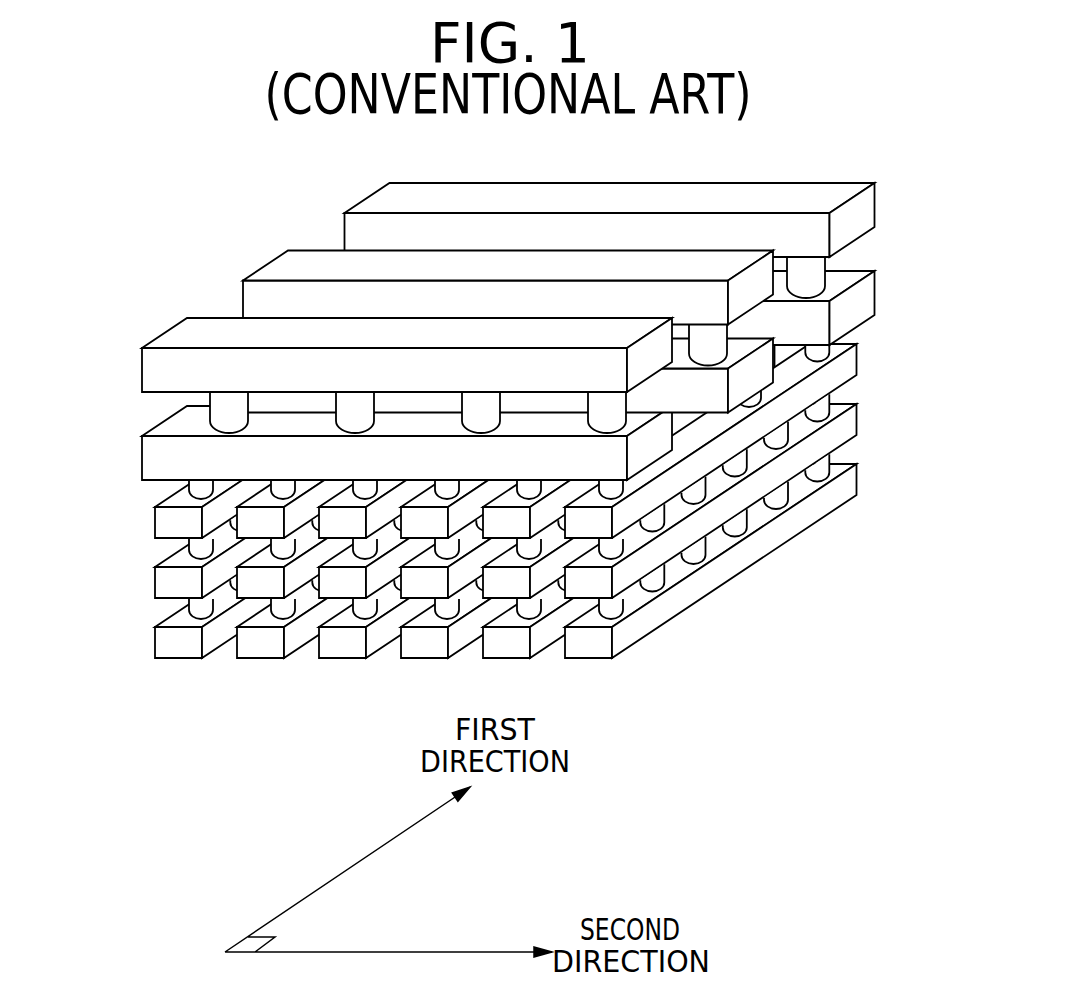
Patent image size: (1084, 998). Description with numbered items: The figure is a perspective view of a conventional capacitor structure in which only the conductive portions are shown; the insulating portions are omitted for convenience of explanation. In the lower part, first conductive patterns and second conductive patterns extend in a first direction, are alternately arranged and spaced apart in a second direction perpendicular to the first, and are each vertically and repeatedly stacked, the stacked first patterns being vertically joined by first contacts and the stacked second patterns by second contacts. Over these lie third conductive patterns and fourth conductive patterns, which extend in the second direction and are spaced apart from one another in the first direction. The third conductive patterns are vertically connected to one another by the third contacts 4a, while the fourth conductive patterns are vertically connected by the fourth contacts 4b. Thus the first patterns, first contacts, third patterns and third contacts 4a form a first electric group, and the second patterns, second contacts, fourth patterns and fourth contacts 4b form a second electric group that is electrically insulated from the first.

The third contacts 4a is at (217, 415).
The fourth contacts 4b is at (713, 332).